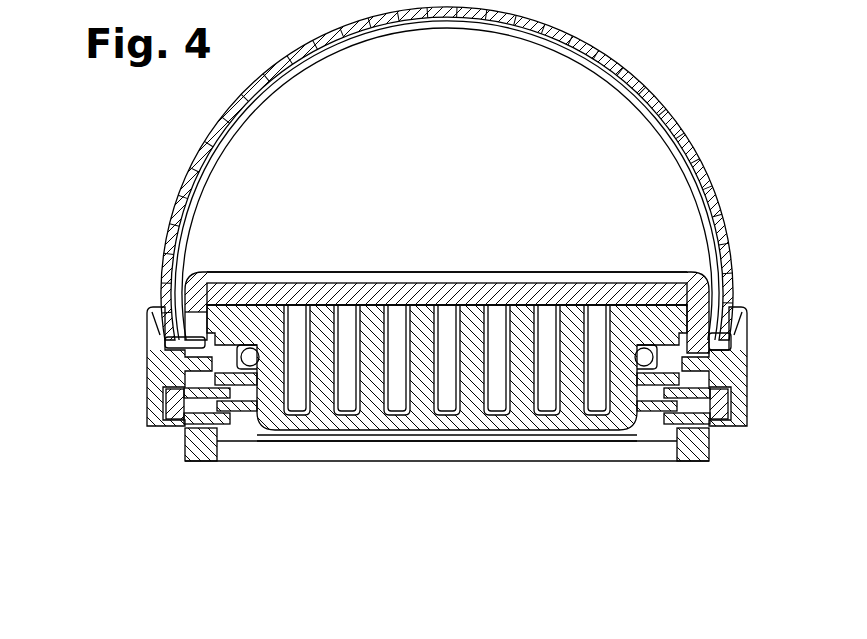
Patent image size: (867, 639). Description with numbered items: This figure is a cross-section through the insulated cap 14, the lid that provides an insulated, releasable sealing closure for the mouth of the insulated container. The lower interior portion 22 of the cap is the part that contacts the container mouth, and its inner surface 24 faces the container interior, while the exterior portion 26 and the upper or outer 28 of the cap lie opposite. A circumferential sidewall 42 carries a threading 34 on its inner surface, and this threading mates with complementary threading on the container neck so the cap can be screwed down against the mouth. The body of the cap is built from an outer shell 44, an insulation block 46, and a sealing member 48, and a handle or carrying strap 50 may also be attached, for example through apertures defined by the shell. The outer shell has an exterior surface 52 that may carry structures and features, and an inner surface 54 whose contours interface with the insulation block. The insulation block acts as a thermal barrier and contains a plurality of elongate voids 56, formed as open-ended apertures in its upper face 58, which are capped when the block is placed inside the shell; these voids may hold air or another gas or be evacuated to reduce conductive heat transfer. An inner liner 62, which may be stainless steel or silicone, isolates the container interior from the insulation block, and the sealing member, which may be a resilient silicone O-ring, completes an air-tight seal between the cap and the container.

The insulated cap 14 is at (84, 238).
The interior portion 22 is at (443, 468).
The inner surface 24 is at (313, 434).
The exterior portion 26 is at (400, 160).
The upper or outer 28 is at (378, 283).
The threading 34 is at (658, 432).
The circumferential sidewall 42 is at (186, 440).
The outer shell 44 is at (430, 275).
The insulation block 46 is at (633, 304).
The sealing member 48 is at (663, 367).
The carrying strap 50 is at (714, 200).
The exterior surface 52 is at (404, 283).
The inner surface 54 is at (222, 316).
The voids 56 is at (500, 405).
The upper face 58 is at (200, 338).
The inner liner 62 is at (588, 440).